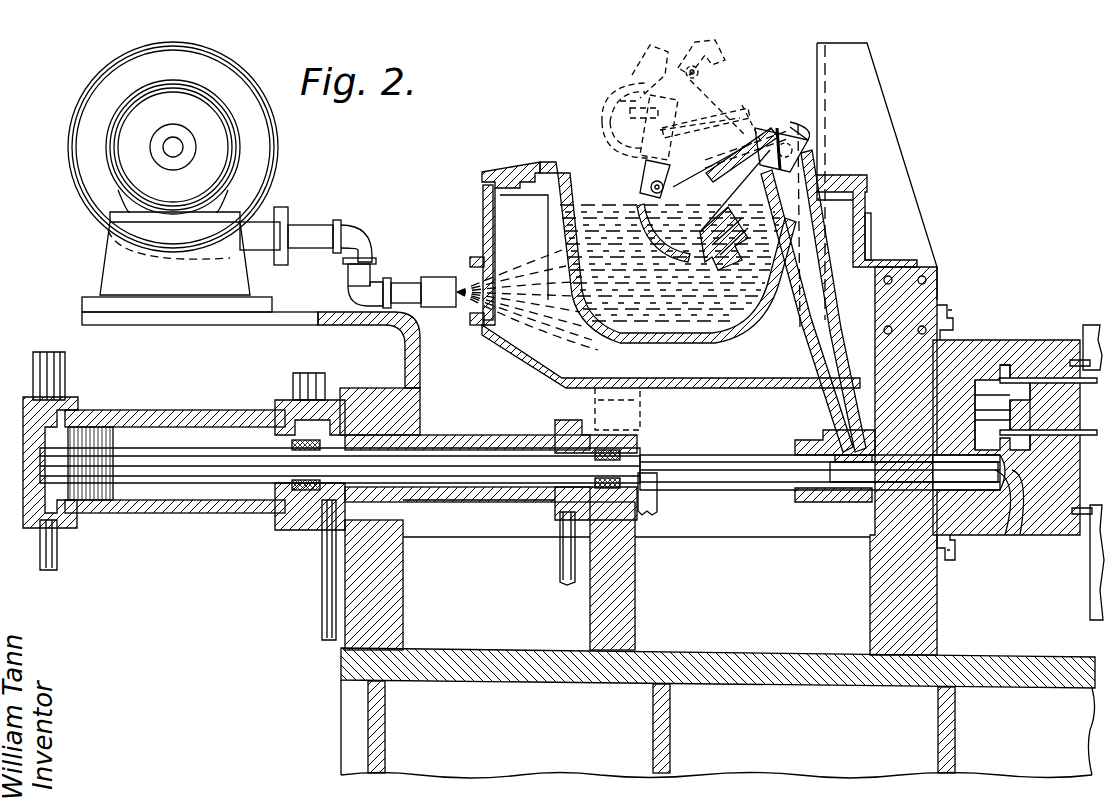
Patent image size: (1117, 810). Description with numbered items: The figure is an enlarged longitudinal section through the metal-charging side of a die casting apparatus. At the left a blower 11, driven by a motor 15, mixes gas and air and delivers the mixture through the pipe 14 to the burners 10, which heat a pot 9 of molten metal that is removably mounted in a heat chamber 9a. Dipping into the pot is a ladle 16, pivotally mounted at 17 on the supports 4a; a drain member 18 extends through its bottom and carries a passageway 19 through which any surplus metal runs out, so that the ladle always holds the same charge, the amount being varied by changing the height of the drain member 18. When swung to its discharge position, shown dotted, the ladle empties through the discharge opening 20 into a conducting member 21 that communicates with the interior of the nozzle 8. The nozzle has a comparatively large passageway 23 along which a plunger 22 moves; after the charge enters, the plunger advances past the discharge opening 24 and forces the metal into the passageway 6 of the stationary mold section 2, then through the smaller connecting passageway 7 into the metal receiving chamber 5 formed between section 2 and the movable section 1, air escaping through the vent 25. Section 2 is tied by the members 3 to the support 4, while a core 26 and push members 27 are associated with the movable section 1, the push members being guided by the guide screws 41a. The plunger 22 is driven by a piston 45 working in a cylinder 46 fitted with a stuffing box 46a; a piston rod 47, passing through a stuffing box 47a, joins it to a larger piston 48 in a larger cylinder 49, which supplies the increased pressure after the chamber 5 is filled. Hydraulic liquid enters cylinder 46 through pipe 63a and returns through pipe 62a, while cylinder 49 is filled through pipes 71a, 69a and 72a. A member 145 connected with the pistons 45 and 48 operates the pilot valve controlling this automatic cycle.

The movable mold section 1 is at (1035, 345).
The stationary mold section 2 is at (985, 388).
The connecting members 3 is at (950, 340).
The support 4 is at (930, 285).
The supports 4a is at (875, 92).
The metal receiving chamber 5 is at (1010, 366).
The passageway 6 is at (975, 490).
The connecting passageway 7 is at (1005, 535).
The nozzle 8 is at (870, 492).
The pot 9 is at (548, 232).
The heat chamber 9a is at (495, 226).
The burners 10 is at (435, 282).
The blower 11 is at (107, 78).
The pipe 14 is at (313, 228).
The motor 15 is at (128, 126).
The ladle 16 is at (620, 101).
The pivot 17 is at (756, 133).
The drain member 18 is at (660, 130).
The passageway 19 is at (690, 85).
The discharge opening 20 is at (783, 160).
The conducting member 21 is at (805, 240).
The plunger 22 is at (698, 455).
The passageway 23 is at (858, 495).
The discharge opening 24 is at (848, 447).
The vent 25 is at (1012, 398).
The core 26 is at (1020, 535).
The push members 27 is at (1050, 378).
The guide screws 41a is at (1092, 325).
The piston 45 is at (372, 388).
The cylinder 46 is at (480, 435).
The stuffing box 46a is at (605, 500).
The piston rod 47 is at (222, 483).
The stuffing box 47a is at (300, 490).
The large piston 48 is at (115, 470).
The large cylinder 49 is at (148, 410).
The pipe 62a is at (560, 570).
The pipe 63a is at (322, 622).
The pipe 69a is at (293, 380).
The pipe 71a is at (66, 360).
The pipe 72a is at (58, 558).
The pilot valve operating member 145 is at (657, 505).